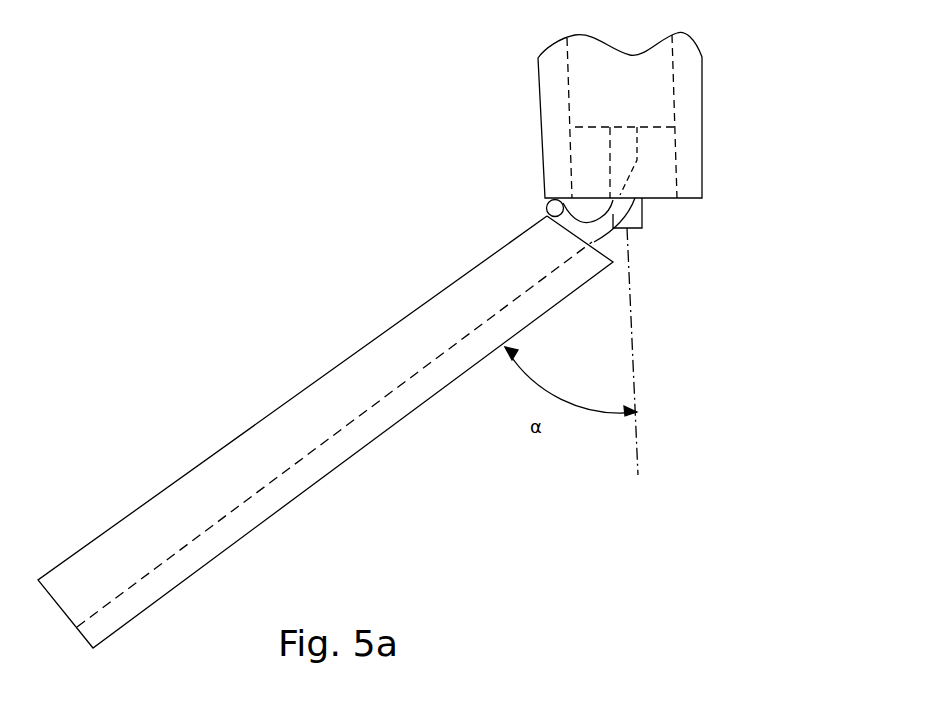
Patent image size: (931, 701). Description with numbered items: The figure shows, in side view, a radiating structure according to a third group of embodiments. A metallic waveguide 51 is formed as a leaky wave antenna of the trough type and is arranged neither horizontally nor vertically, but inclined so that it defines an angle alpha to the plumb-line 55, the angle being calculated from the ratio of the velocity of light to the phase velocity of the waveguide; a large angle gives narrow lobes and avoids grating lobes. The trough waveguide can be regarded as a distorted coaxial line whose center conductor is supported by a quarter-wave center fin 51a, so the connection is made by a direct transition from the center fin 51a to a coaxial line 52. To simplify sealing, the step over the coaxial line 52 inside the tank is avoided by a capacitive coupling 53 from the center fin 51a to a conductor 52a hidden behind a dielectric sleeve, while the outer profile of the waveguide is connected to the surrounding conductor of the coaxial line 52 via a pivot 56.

The metallic waveguide 51 is at (395, 320).
The center fin 51a is at (390, 392).
The coaxial line 52 is at (627, 83).
The conductor 52a is at (630, 142).
The capacitive coupling 53 is at (628, 180).
The plumb-line 55 is at (633, 343).
The pivot 56 is at (547, 207).